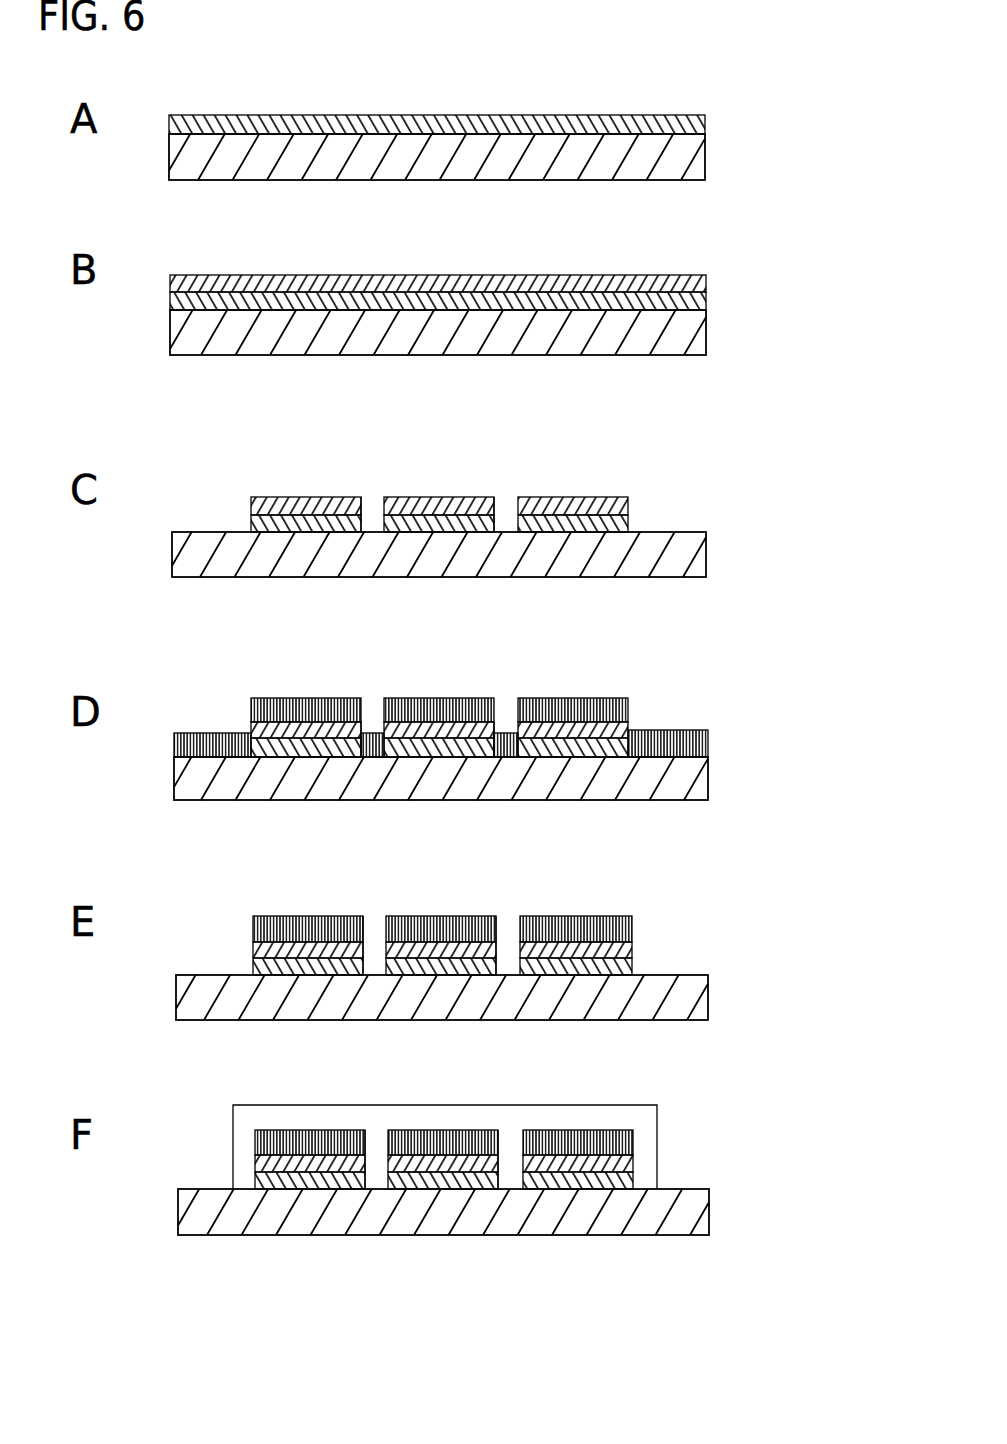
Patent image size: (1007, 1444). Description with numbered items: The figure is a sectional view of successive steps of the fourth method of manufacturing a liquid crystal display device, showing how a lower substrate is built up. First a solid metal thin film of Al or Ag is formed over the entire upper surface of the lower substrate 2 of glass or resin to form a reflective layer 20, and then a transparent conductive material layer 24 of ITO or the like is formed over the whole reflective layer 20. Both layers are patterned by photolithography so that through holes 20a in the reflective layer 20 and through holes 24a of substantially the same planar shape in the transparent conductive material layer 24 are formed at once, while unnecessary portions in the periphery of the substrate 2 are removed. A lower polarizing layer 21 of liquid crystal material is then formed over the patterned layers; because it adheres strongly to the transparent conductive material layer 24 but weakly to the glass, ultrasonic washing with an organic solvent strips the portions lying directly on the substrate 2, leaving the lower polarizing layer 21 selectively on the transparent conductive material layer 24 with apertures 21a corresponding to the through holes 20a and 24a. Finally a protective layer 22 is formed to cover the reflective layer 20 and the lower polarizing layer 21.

The lower substrate 2 is at (705, 160).
The reflective layer 20 is at (705, 122).
The through holes 20a is at (368, 520).
The transparent conductive material layer 24 is at (706, 284).
The through holes 24a is at (362, 505).
The lower polarizing layer 21 is at (285, 700).
The apertures 21a is at (365, 925).
The protective layer 22 is at (260, 1112).